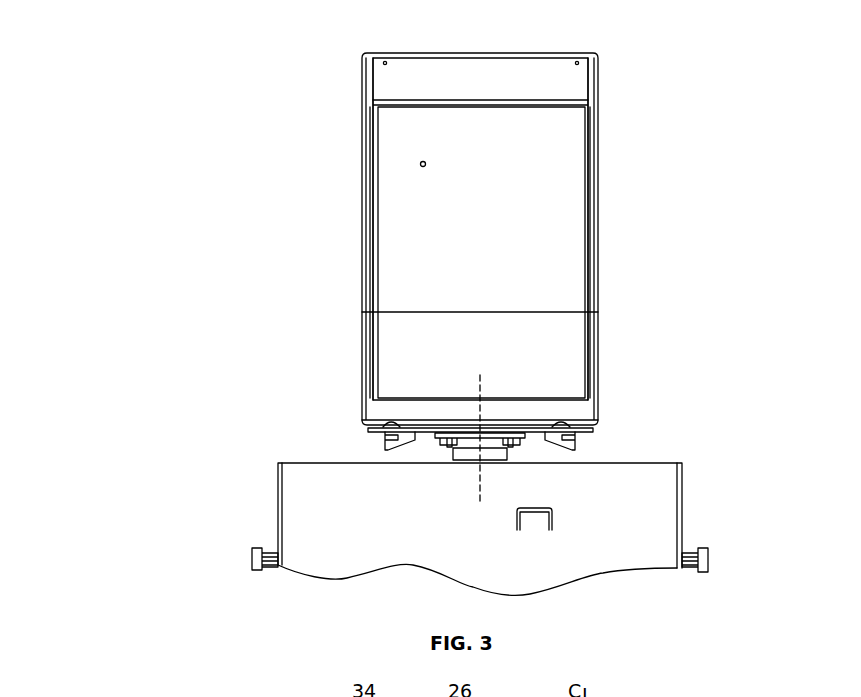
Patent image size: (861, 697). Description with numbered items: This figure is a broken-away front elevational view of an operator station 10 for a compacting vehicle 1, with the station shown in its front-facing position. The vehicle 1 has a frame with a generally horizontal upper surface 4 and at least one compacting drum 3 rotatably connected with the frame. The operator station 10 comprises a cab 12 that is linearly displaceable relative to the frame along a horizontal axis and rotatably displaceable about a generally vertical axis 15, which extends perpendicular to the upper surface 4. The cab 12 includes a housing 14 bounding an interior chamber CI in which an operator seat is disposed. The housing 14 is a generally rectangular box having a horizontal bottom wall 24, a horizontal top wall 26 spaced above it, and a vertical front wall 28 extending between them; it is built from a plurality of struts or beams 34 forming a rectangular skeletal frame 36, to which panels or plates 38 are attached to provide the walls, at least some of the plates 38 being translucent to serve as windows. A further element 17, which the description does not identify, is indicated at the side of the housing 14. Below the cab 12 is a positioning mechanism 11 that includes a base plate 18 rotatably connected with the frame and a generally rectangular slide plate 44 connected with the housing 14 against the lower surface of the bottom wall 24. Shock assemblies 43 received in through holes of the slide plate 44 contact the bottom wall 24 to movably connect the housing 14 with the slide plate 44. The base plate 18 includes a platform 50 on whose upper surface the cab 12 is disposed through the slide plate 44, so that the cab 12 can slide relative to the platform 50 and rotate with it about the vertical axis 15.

The compacting vehicle 1 is at (205, 457).
The compacting drum 3 is at (685, 508).
The upper surface 4 is at (625, 462).
The operator station 10 is at (245, 255).
The positioning mechanism 11 is at (348, 440).
The cab 12 is at (322, 123).
The housing 14 is at (607, 162).
The vertical axis 15 is at (473, 488).
The cross member 17 is at (565, 325).
The base plate 18 is at (518, 450).
The bottom wall 24 is at (385, 448).
The top wall 26 is at (470, 53).
The front vertical wall 28 is at (553, 250).
The struts or beams 34 is at (596, 108).
The skeletal frame 36 is at (599, 207).
The panels or plates 38 is at (519, 263).
The shock assembly 43 is at (395, 432).
The slide plate 44 is at (362, 430).
The platform 50 is at (457, 450).
The interior chamber CI is at (420, 164).